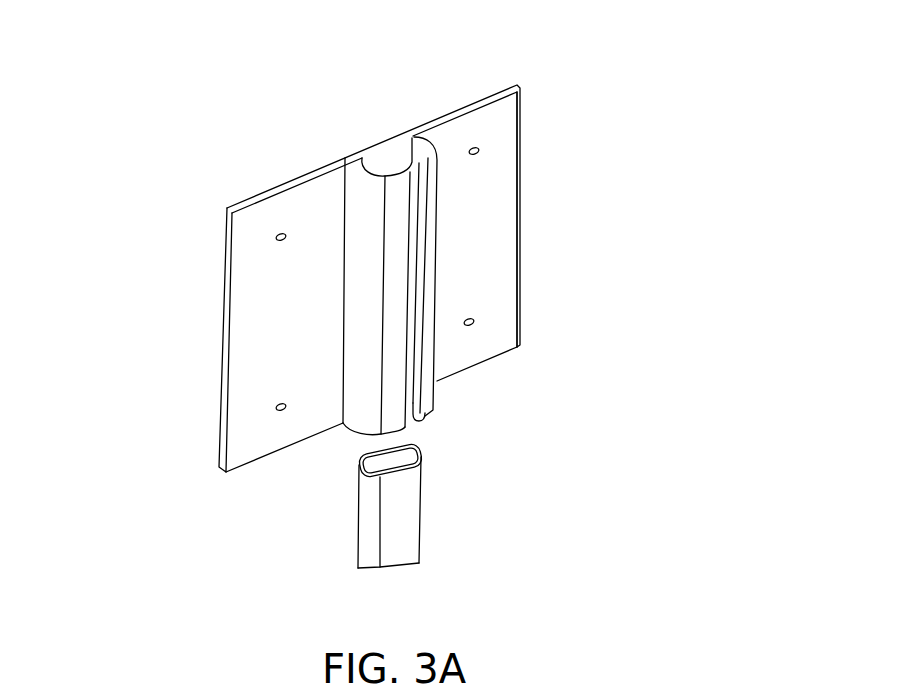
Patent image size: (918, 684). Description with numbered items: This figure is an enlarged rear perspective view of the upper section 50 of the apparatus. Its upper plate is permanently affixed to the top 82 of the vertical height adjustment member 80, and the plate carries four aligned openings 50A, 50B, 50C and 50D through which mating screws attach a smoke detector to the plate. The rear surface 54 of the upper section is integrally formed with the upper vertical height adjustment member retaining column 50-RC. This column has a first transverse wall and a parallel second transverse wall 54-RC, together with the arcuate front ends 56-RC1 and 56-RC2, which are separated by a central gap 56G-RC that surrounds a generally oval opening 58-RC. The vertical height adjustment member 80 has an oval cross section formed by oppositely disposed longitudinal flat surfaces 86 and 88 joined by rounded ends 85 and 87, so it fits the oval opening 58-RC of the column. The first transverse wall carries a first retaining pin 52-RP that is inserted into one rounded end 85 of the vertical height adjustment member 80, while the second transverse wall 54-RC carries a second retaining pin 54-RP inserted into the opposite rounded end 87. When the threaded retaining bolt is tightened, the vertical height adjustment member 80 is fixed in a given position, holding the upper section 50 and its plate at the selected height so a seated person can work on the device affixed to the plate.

The upper section 50 is at (392, 297).
The opening 50A is at (276, 238).
The opening 50B is at (276, 408).
The opening 50C is at (479, 151).
The opening 50D is at (474, 322).
The upper vertical height adjustment member retaining column 50-RC is at (271, 297).
The first retaining pin 52-RP is at (430, 256).
The rear surface 54 is at (511, 107).
The second retaining pin 54-RP is at (355, 270).
The second transverse wall 54-RC is at (355, 312).
The arcuate front end 56-RC1 is at (555, 289).
The arcuate front end 56-RC2 is at (393, 383).
The central gap 56G-RC is at (428, 418).
The oval opening 58-RC is at (392, 142).
The vertical height adjustment member 80 is at (406, 532).
The top 82 is at (421, 466).
The rounded end 85 is at (418, 455).
The longitudinal flat surface 86 is at (398, 558).
The rounded end 87 is at (364, 547).
The longitudinal flat surface 88 is at (362, 465).